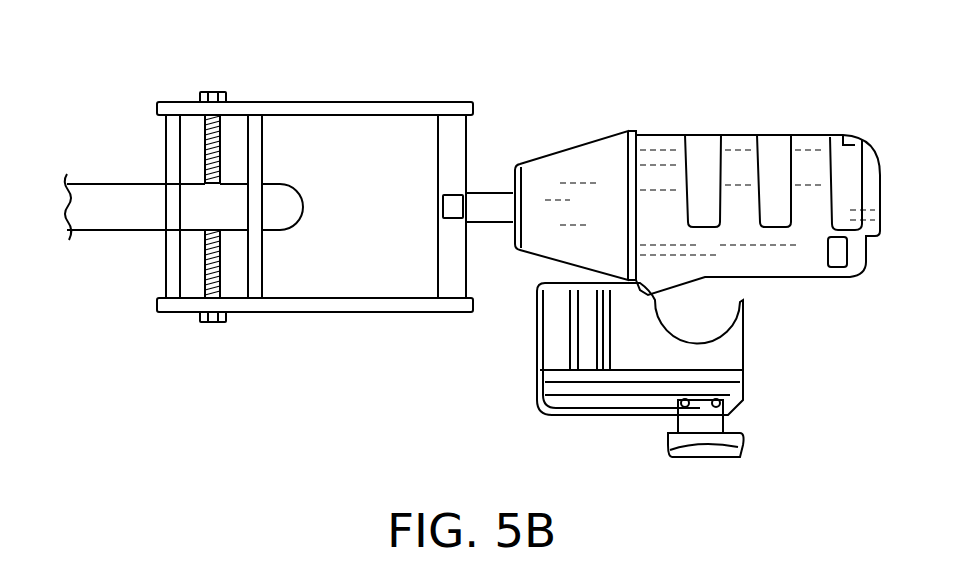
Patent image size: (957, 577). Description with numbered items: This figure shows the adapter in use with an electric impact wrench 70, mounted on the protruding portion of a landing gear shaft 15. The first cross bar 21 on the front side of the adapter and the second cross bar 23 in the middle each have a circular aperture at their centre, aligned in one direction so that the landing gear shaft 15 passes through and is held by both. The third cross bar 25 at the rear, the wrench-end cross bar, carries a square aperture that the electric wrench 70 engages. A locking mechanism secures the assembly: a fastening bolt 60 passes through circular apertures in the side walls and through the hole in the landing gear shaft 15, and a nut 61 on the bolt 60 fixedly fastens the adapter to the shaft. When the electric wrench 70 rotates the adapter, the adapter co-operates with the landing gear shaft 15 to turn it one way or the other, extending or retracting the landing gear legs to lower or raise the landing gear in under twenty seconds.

The landing gear shaft 15 is at (100, 184).
The first cross bar 21 is at (166, 148).
The second cross bar 23 is at (262, 148).
The third cross bar 25 is at (438, 143).
The fastening bolt 60 is at (222, 150).
The nut 61 is at (215, 325).
The electric impact wrench 70 is at (612, 175).